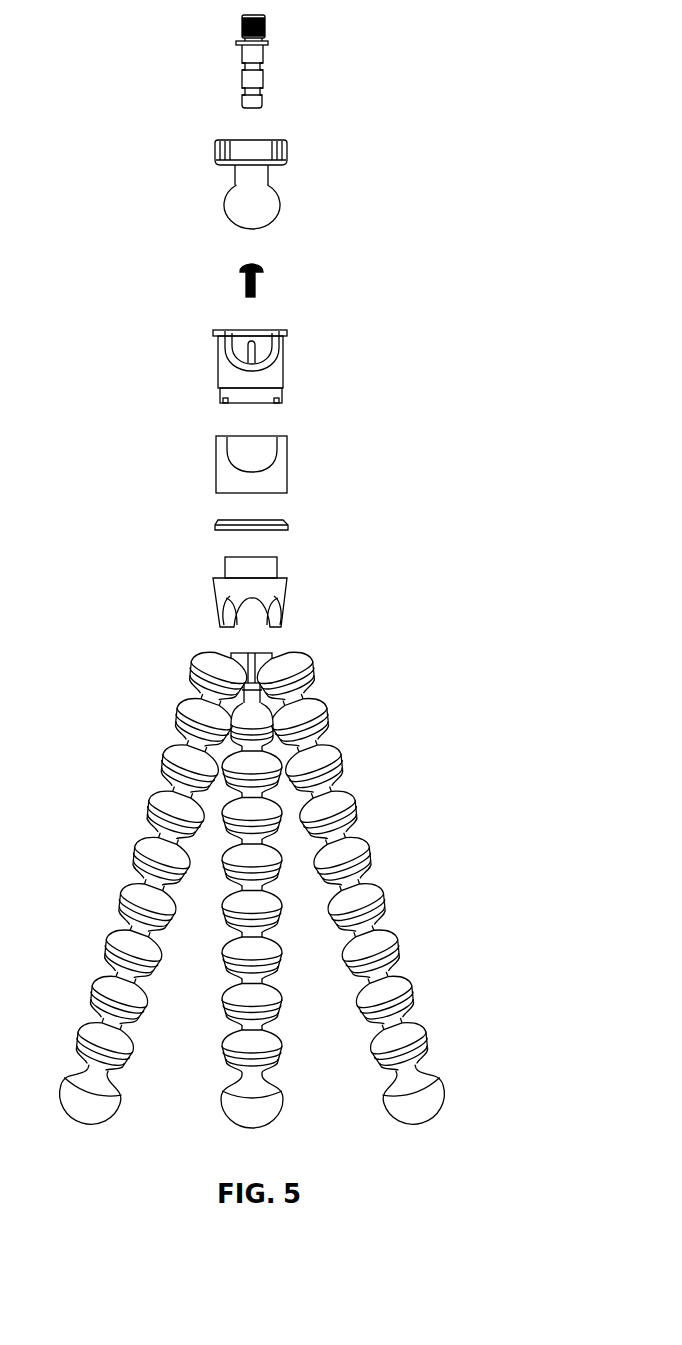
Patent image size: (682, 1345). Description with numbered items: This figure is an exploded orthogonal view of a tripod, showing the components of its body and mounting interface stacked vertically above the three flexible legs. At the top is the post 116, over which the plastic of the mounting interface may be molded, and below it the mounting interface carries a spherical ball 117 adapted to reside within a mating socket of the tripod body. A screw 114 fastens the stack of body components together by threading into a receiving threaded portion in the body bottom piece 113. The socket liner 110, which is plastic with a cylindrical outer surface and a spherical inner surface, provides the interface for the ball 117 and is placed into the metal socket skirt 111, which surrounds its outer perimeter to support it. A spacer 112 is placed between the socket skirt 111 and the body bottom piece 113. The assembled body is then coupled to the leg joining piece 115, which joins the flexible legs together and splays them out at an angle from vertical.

The post 116 is at (265, 53).
The leg joining piece 115 is at (290, 147).
The spherical ball 117 is at (224, 212).
The screw 114 is at (263, 278).
The socket liner 110 is at (287, 360).
The socket skirt 111 is at (287, 442).
The spacer 112 is at (288, 528).
The body bottom piece 113 is at (288, 587).